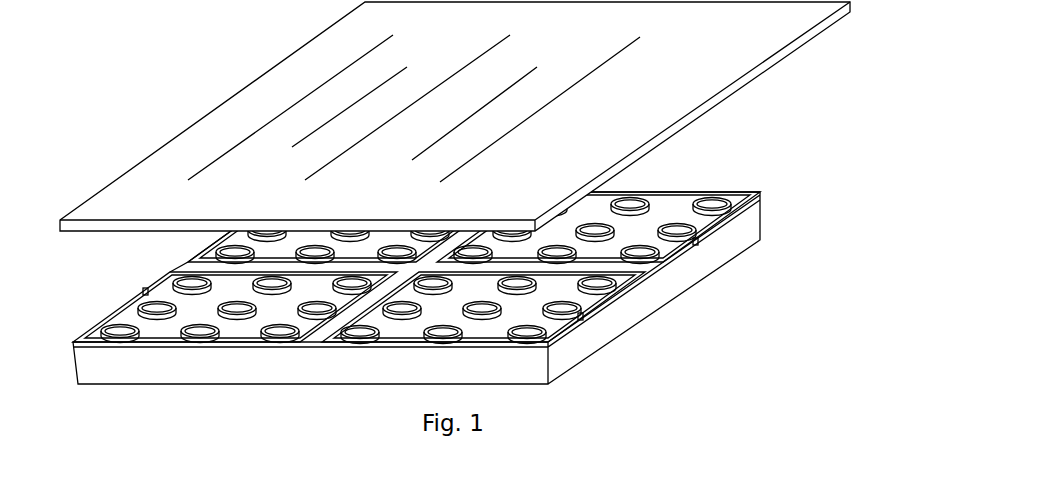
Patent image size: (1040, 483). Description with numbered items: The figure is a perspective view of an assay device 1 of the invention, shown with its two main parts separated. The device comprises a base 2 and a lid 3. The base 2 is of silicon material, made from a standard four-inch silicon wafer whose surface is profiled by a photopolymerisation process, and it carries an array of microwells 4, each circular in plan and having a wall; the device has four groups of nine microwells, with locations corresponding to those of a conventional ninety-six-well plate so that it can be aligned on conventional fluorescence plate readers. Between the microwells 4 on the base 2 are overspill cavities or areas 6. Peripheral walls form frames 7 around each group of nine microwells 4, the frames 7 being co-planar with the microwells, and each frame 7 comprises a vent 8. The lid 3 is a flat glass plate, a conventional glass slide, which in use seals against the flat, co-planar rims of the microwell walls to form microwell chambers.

The assay device 1 is at (433, 211).
The base 2 is at (409, 302).
The lid 3 is at (752, 110).
The microwells 4 is at (400, 320).
The overspill cavities 6 is at (235, 307).
The frames 7 is at (199, 347).
The vent 8 is at (144, 292).